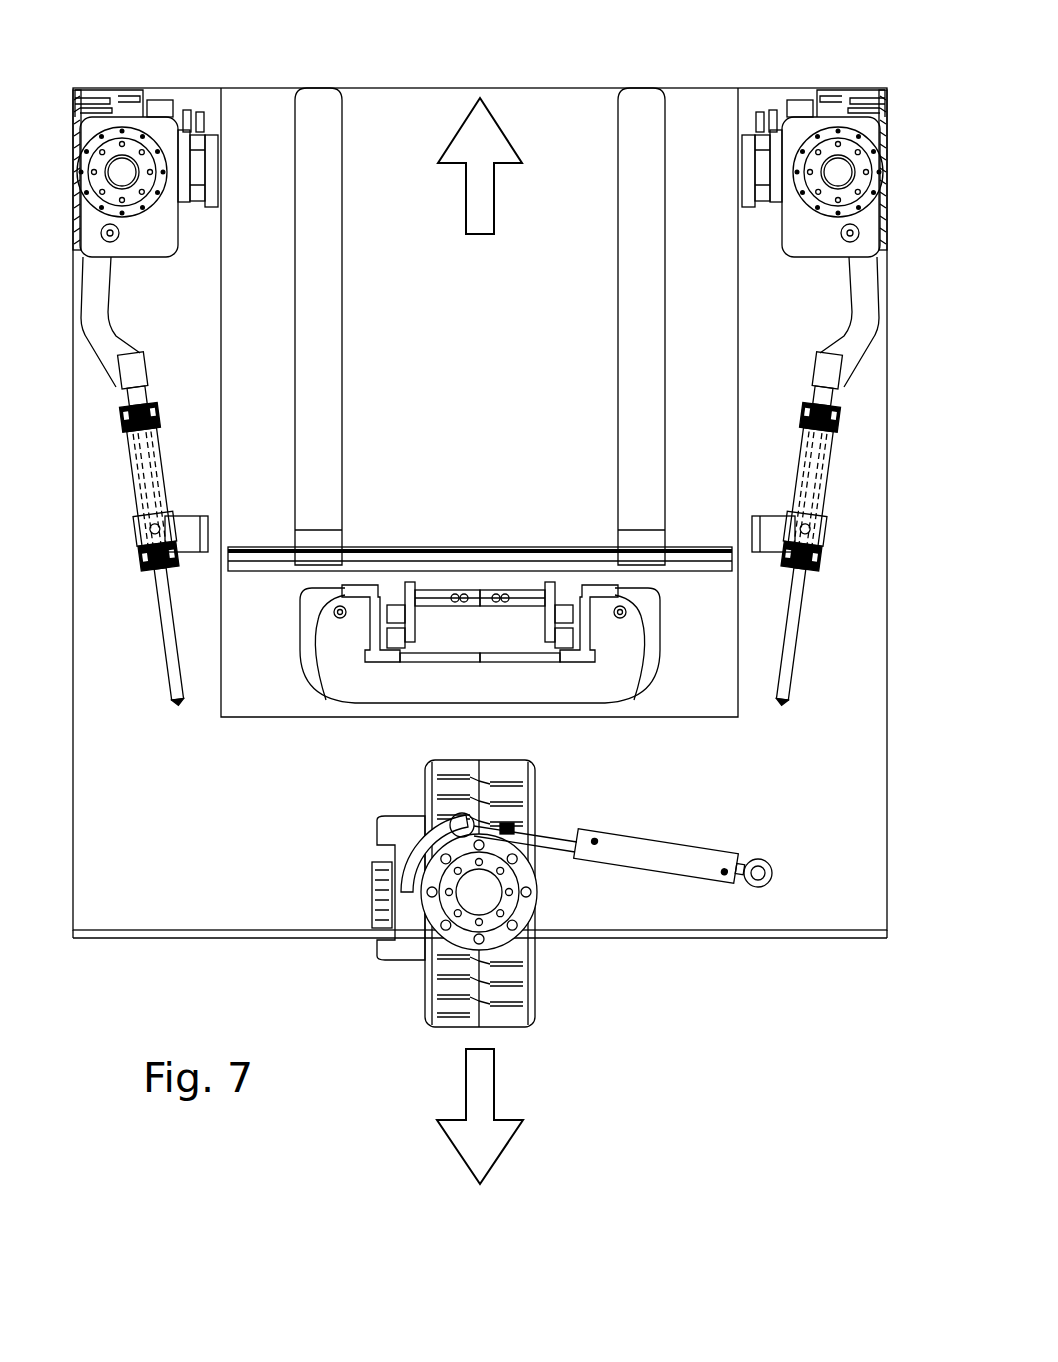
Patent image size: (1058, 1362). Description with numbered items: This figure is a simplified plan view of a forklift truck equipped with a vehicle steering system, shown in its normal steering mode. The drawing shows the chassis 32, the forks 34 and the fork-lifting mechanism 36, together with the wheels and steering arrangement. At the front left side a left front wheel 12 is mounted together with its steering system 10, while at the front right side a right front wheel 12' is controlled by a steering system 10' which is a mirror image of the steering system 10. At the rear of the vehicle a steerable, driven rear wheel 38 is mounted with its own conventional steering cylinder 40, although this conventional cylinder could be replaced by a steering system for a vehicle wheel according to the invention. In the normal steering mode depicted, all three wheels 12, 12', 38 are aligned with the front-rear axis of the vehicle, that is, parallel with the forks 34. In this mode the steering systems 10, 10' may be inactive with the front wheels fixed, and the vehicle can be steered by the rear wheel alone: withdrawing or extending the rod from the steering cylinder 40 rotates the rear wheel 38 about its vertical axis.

The steering system 10 is at (168, 482).
The steering system 10' is at (791, 482).
The left front wheel 12 is at (145, 145).
The right front wheel 12' is at (814, 145).
The chassis 32 is at (858, 723).
The forks 34 is at (343, 427).
The fork-lifting mechanism 36 is at (458, 628).
The rear wheel 38 is at (442, 803).
The steering cylinder 40 is at (668, 825).